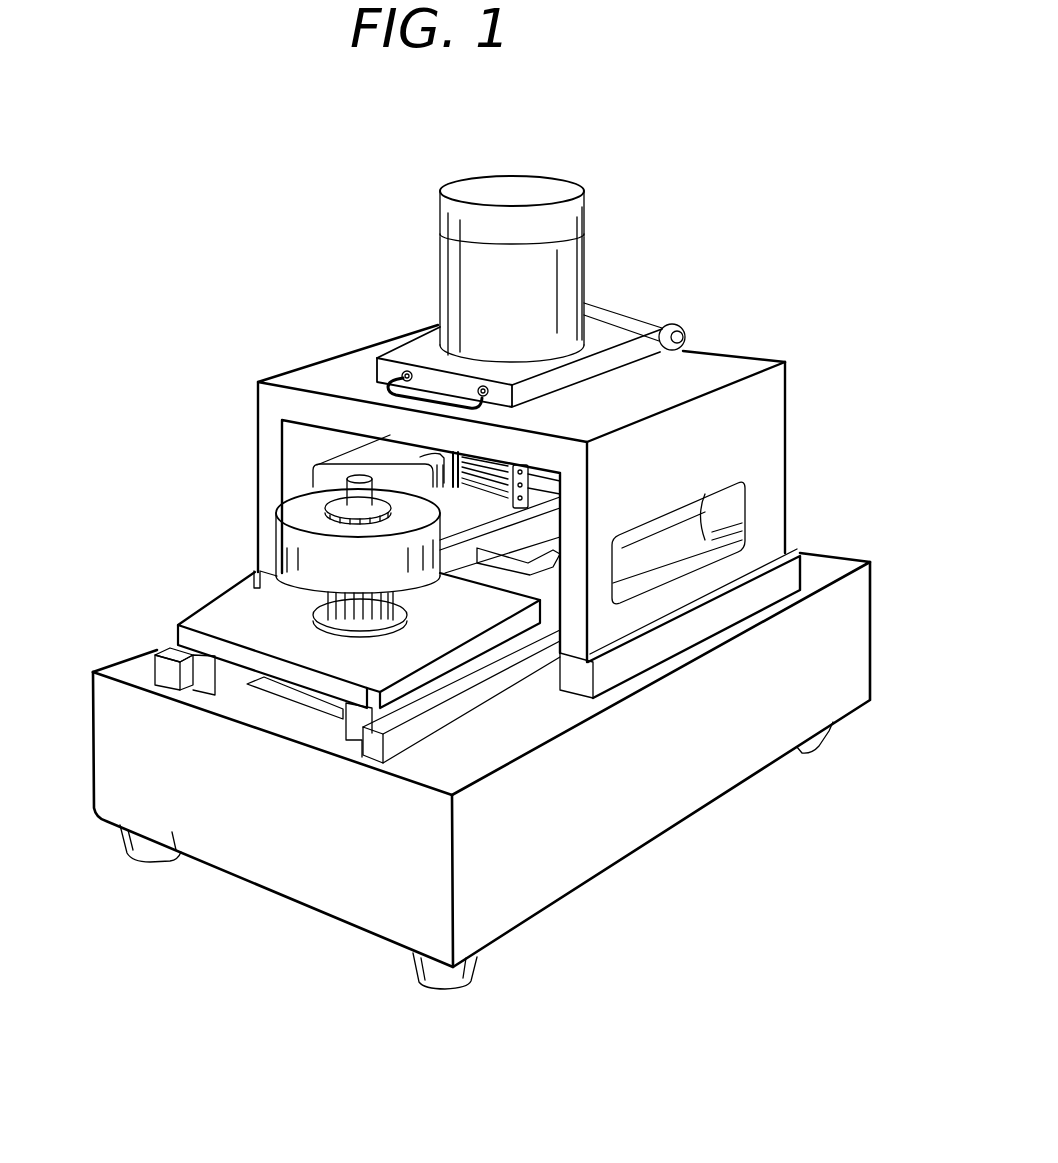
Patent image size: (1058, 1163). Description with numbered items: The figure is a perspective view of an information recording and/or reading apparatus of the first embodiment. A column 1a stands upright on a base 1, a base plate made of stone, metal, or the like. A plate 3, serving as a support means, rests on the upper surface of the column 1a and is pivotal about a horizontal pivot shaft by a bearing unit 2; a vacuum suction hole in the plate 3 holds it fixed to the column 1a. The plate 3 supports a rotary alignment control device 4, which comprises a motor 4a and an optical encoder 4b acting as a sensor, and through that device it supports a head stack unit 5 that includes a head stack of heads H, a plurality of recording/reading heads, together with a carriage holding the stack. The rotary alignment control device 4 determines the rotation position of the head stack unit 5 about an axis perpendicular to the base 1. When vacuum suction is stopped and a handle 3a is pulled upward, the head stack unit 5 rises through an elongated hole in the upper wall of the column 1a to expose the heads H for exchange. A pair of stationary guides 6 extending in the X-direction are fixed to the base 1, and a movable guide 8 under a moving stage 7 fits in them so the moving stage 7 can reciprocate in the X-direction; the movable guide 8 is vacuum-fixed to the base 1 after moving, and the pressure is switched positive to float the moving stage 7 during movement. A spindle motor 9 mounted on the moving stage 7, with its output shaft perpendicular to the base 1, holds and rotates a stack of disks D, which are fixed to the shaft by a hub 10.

The base 1 is at (827, 681).
The column 1a is at (760, 445).
The bearing unit 2 is at (623, 317).
The plate 3 is at (593, 367).
The handle 3a is at (395, 371).
The rotary alignment control device 4 is at (566, 208).
The motor 4a is at (548, 275).
The optical encoder 4b is at (513, 183).
The head stack unit 5 is at (473, 484).
The stationary guides 6 is at (163, 672).
The moving stage 7 is at (197, 623).
The movable guide 8 is at (343, 723).
The spindle motor 9 is at (400, 630).
The hub 10 is at (357, 477).
The disks D is at (303, 510).
The heads H is at (508, 503).
The X-direction X is at (243, 559).